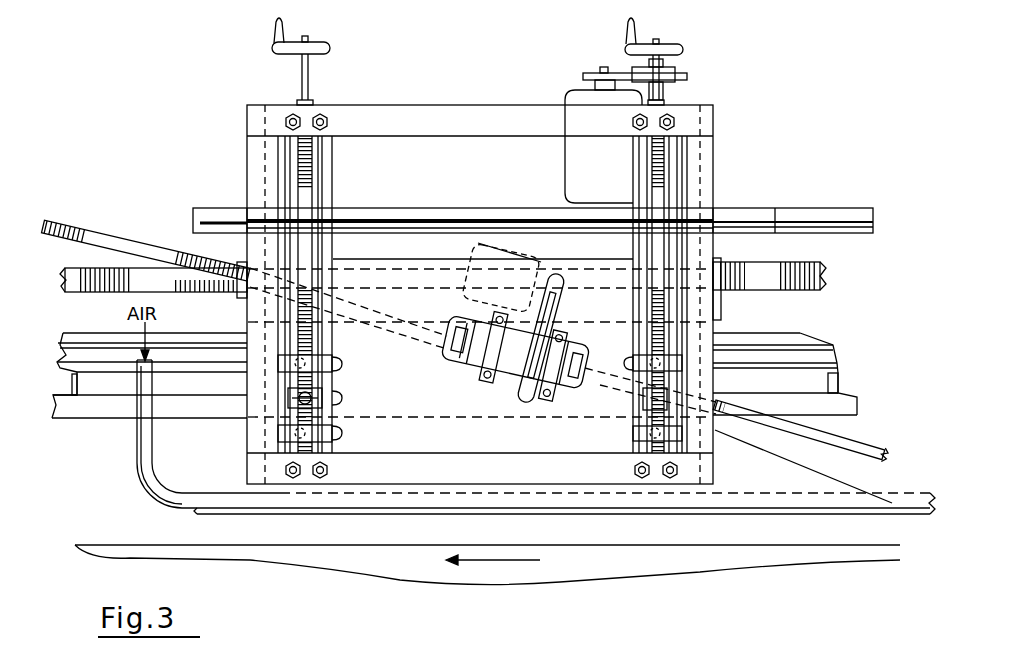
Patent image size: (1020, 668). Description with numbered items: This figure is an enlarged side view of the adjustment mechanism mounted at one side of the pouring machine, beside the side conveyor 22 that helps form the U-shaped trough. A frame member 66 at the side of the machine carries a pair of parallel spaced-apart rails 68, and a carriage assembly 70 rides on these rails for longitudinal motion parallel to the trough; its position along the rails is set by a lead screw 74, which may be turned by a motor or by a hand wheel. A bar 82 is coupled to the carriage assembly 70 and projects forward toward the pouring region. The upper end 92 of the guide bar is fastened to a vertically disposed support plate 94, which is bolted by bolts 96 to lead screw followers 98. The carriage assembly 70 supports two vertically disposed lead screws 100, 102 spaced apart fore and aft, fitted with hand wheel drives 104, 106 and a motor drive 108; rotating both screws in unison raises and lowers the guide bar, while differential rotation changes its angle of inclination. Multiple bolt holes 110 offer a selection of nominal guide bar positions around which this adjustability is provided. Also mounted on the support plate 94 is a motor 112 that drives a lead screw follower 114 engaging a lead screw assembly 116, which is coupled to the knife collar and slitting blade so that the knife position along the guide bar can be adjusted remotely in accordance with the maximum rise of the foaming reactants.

The side conveyor 22 is at (612, 560).
The frame member 66 is at (72, 417).
The rail 68 is at (85, 335).
The carriage assembly 70 is at (705, 142).
The lead screw 74 is at (80, 272).
The bar 82 is at (835, 210).
The upper end of the guide bar 92 is at (912, 493).
The support plate 94 is at (762, 495).
The bolt 96 is at (298, 398).
The lead screw follower 98 is at (295, 362).
The lead screw 100 is at (303, 163).
The lead screw 102 is at (660, 188).
The hand wheel drive 104 is at (330, 47).
The hand wheel drive 106 is at (673, 45).
The motor drive 108 is at (575, 93).
The bolt hole 110 is at (343, 362).
The motor 112 is at (480, 246).
The lead screw follower 114 is at (518, 370).
The lead screw assembly 116 is at (85, 238).